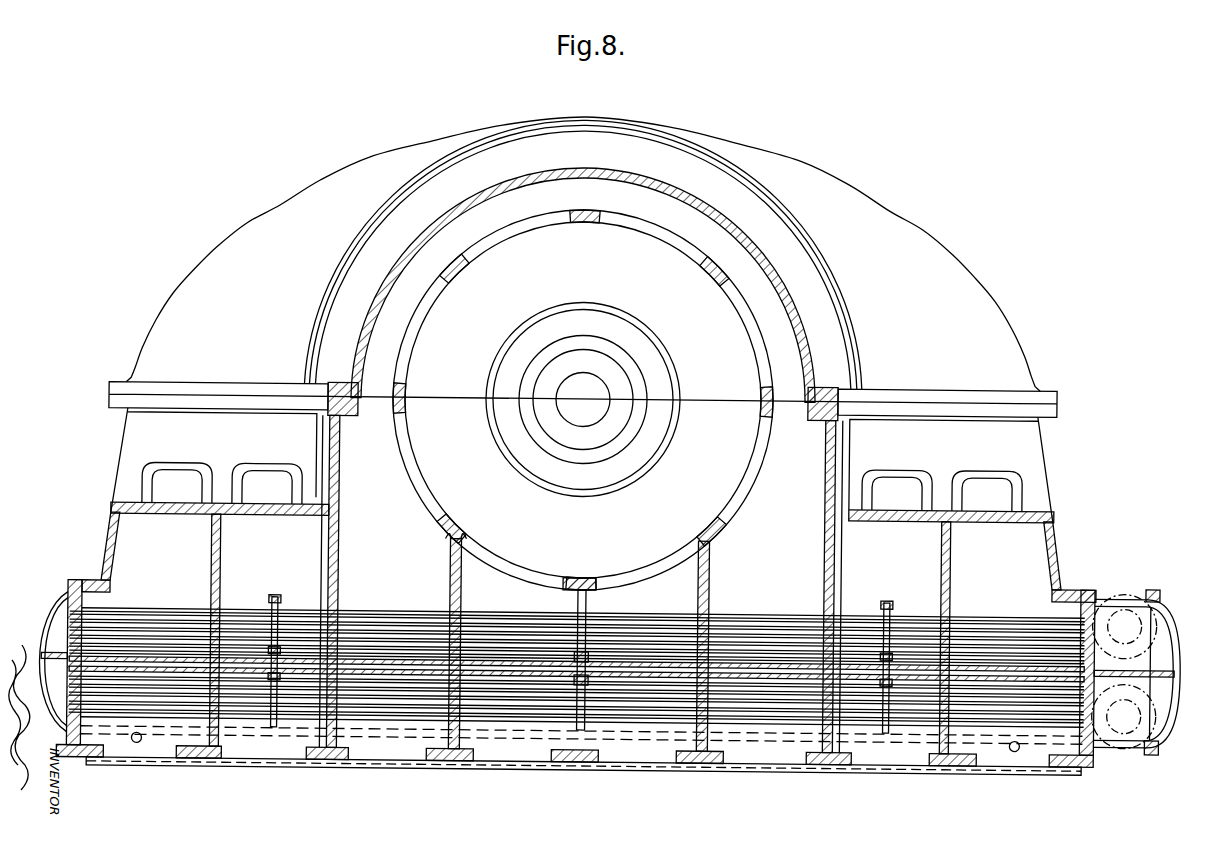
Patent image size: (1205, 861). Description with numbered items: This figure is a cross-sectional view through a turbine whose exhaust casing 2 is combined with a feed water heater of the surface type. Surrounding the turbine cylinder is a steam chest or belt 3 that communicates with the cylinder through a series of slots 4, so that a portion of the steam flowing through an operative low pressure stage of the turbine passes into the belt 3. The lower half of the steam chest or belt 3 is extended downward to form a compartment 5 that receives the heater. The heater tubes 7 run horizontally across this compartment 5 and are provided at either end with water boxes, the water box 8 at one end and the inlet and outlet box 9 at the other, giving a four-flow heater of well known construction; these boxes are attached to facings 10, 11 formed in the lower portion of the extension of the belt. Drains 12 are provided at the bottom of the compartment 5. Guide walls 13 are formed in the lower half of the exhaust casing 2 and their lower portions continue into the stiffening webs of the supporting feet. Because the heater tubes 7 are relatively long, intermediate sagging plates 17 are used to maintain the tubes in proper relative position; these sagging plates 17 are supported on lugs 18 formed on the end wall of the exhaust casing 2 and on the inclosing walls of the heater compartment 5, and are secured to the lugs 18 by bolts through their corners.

The exhaust casing 2 is at (296, 199).
The steam chest or belt 3 is at (452, 223).
The slots 4 is at (507, 232).
The compartment 5 is at (523, 742).
The heater tubes 7 is at (612, 710).
The water box 8 is at (54, 672).
The inlet and outlet box 9 is at (1179, 666).
The facing 10 is at (76, 584).
The facing 11 is at (1091, 590).
The drains 12 is at (140, 747).
The guide walls 13 is at (219, 557).
The sagging plates 17 is at (272, 604).
The lugs 18 is at (279, 602).